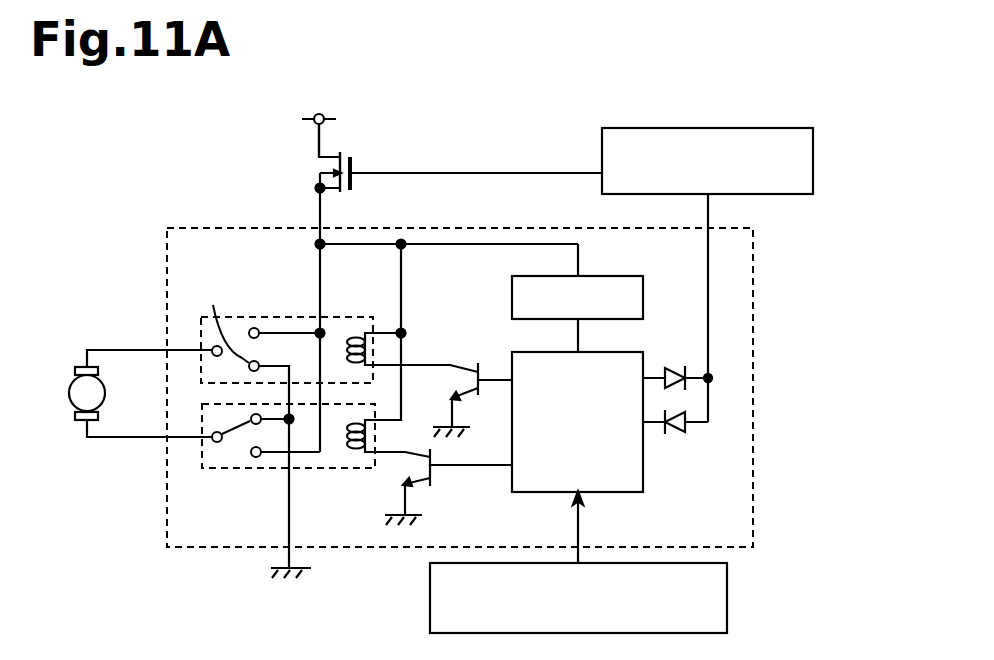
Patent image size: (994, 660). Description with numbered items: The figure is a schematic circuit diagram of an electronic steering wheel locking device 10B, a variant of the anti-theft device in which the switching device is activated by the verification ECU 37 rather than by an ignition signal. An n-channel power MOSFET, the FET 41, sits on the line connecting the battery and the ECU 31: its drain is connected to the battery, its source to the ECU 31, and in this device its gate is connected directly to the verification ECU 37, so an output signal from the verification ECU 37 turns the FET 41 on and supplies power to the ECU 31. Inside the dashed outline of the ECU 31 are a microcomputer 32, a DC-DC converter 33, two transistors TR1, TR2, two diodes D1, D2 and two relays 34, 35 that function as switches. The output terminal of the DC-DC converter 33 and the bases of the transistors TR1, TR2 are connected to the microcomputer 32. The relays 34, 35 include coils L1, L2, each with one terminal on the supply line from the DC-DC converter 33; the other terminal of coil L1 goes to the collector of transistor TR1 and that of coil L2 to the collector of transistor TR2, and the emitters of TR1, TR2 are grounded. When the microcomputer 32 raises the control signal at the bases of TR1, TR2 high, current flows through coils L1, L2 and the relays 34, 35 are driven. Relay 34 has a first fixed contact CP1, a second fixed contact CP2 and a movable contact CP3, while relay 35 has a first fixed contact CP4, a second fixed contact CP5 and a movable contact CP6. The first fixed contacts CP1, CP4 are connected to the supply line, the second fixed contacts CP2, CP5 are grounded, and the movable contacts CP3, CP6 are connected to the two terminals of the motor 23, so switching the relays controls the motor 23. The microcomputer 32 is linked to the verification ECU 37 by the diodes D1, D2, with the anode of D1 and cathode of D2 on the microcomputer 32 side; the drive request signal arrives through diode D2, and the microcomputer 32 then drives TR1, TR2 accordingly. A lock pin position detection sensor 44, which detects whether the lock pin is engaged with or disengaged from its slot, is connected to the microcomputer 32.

The electronic steering wheel locking device 10B is at (752, 99).
The n-channel power MOSFET (FET) 41 is at (355, 172).
The verification ECU 37 is at (816, 161).
The ECU 31 is at (755, 285).
The DC-DC converter 33 is at (617, 272).
The relay 34 is at (338, 312).
The relay 35 is at (311, 470).
The motor 23 is at (68, 385).
The microcomputer 32 is at (625, 493).
The lock pin position detection sensor 44 is at (730, 593).
The coil L1 is at (362, 333).
The coil L2 is at (362, 452).
The transistor TR1 is at (470, 366).
The transistor TR2 is at (432, 481).
The diode D1 is at (677, 367).
The diode D2 is at (676, 434).
The first fixed contact CP1 is at (256, 327).
The second fixed contact CP2 is at (218, 322).
The movable contact CP3 is at (214, 347).
The first fixed contact CP4 is at (256, 460).
The second fixed contact CP5 is at (238, 433).
The movable contact CP6 is at (215, 441).